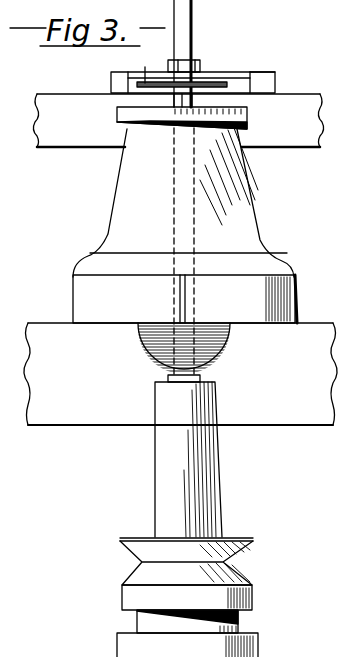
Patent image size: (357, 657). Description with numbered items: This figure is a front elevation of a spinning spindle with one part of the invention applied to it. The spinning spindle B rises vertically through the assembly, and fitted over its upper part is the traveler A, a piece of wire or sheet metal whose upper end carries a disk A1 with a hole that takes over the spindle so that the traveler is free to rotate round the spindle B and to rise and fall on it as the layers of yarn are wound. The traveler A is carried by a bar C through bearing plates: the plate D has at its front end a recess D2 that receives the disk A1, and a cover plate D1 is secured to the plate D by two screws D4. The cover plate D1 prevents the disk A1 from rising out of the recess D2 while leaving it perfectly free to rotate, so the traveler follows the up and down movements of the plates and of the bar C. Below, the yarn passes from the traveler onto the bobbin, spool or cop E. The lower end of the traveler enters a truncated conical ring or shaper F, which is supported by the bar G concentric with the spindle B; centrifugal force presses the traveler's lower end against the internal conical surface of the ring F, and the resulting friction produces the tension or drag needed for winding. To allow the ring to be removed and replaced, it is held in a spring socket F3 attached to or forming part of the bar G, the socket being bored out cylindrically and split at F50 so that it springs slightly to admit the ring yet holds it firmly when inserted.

The spinning spindle B is at (193, 15).
The traveler A is at (184, 100).
The disk A1 is at (139, 69).
The bar C is at (178, 120).
The plate D is at (250, 88).
The cover plate D1 is at (256, 75).
The recess D2 is at (211, 82).
The screws D4 is at (200, 65).
The truncated conical ring F is at (253, 186).
The spring socket F3 is at (185, 299).
The split F50 is at (186, 290).
The bobbin, spool or cop E is at (228, 342).
The bar G is at (180, 374).